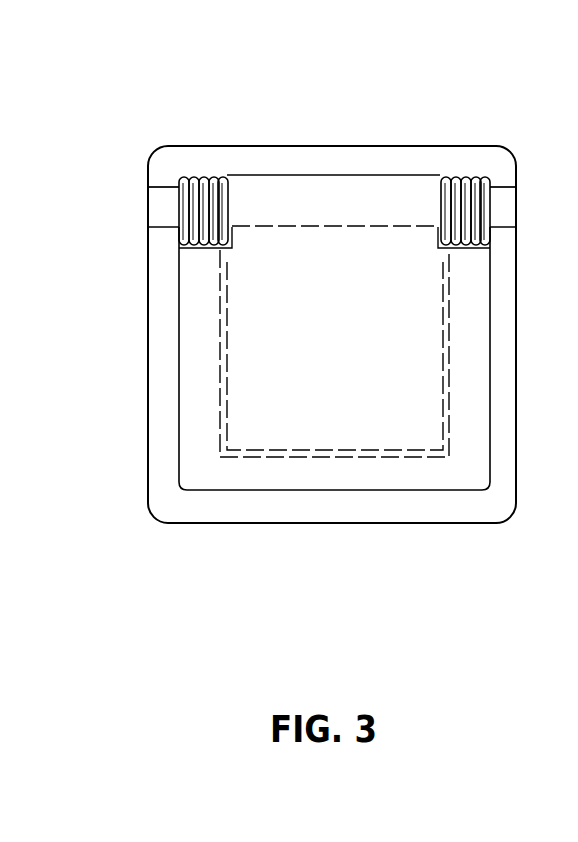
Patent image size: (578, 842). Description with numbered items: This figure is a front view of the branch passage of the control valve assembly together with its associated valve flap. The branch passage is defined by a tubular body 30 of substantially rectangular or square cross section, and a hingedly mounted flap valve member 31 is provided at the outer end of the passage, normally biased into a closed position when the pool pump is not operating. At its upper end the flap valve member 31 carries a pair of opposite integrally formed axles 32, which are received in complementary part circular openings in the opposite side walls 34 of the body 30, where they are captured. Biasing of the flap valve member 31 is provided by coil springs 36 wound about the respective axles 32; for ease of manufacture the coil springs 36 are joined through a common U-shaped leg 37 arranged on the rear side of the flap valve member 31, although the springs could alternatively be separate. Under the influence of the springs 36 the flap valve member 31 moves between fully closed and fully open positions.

The tubular body 30 is at (376, 118).
The flap valve member 31 is at (387, 433).
The axles 32 is at (146, 195).
The side walls 34 is at (513, 323).
The coil springs 36 is at (216, 180).
The U-shaped leg 37 is at (448, 400).